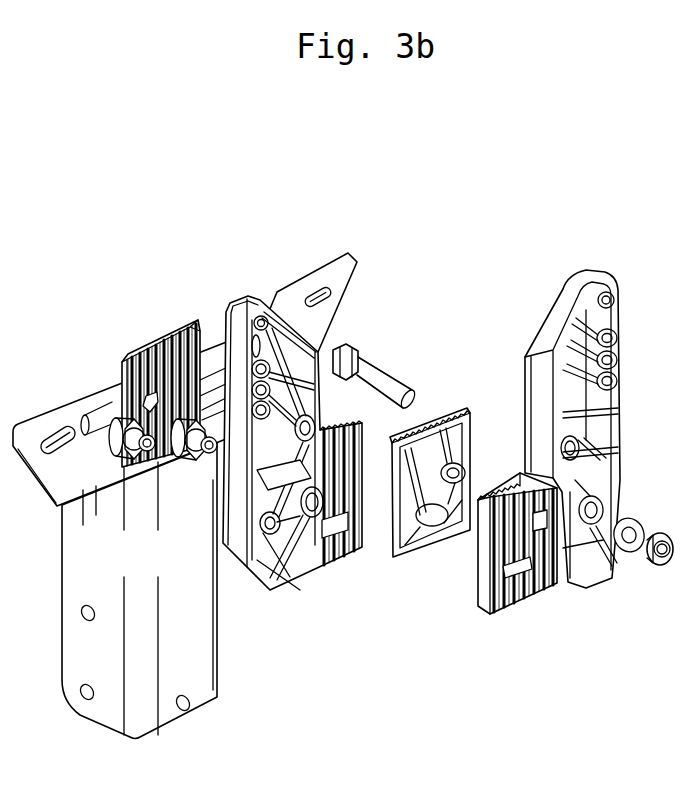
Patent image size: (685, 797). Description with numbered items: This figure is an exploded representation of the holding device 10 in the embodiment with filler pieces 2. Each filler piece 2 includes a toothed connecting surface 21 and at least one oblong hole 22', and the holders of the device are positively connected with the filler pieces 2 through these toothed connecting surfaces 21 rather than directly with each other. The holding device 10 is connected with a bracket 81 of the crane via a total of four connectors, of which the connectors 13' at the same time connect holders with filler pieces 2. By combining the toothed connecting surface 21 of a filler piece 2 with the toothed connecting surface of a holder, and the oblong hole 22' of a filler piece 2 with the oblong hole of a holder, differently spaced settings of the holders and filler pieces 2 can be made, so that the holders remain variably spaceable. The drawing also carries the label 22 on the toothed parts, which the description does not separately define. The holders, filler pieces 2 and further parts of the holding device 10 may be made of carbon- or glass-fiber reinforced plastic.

The holding device 10 is at (383, 164).
The filler piece 2 is at (152, 346).
The toothed connecting surface 21 is at (195, 335).
The toothing / grooves 22 is at (300, 431).
The oblong hole 22' is at (278, 531).
The connector 13' is at (163, 493).
The bracket 81 is at (185, 496).